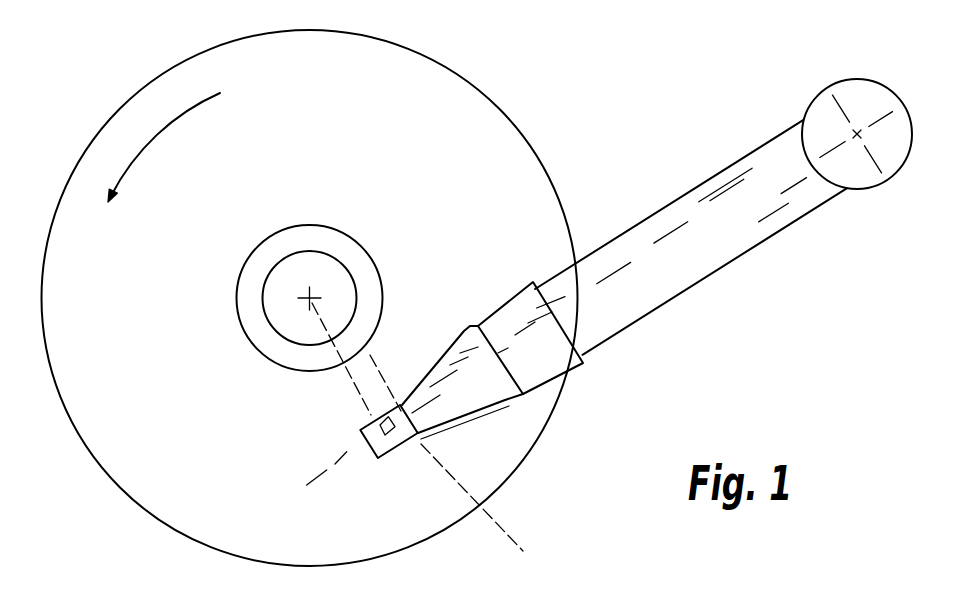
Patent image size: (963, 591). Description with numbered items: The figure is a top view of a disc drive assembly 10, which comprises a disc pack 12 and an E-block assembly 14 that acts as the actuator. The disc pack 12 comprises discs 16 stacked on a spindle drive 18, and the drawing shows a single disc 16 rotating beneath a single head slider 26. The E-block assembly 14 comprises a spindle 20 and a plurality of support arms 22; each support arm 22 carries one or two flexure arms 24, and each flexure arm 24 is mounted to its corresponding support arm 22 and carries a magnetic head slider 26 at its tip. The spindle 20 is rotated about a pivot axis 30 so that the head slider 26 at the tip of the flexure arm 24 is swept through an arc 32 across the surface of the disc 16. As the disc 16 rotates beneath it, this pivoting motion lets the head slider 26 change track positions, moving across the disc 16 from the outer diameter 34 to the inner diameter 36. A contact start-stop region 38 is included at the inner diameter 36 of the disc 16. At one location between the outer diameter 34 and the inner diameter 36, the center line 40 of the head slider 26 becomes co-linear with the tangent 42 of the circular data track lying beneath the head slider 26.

The disc drive assembly 10 is at (592, 117).
The disc pack 12 is at (143, 87).
The E-block assembly 14 is at (657, 247).
The disc 16 is at (370, 40).
The spindle drive 18 is at (282, 257).
The spindle 20 is at (857, 127).
The support arm 22 is at (690, 272).
The flexure arm 24 is at (480, 395).
The head slider 26 is at (402, 455).
The pivot axis 30 is at (857, 130).
The arc 32 is at (503, 527).
The outer diameter 34 is at (106, 329).
The inner diameter 36 is at (209, 385).
The contact start-stop (CSS) region 38 is at (335, 245).
The center line 40 is at (315, 480).
The tangent 42 is at (340, 460).